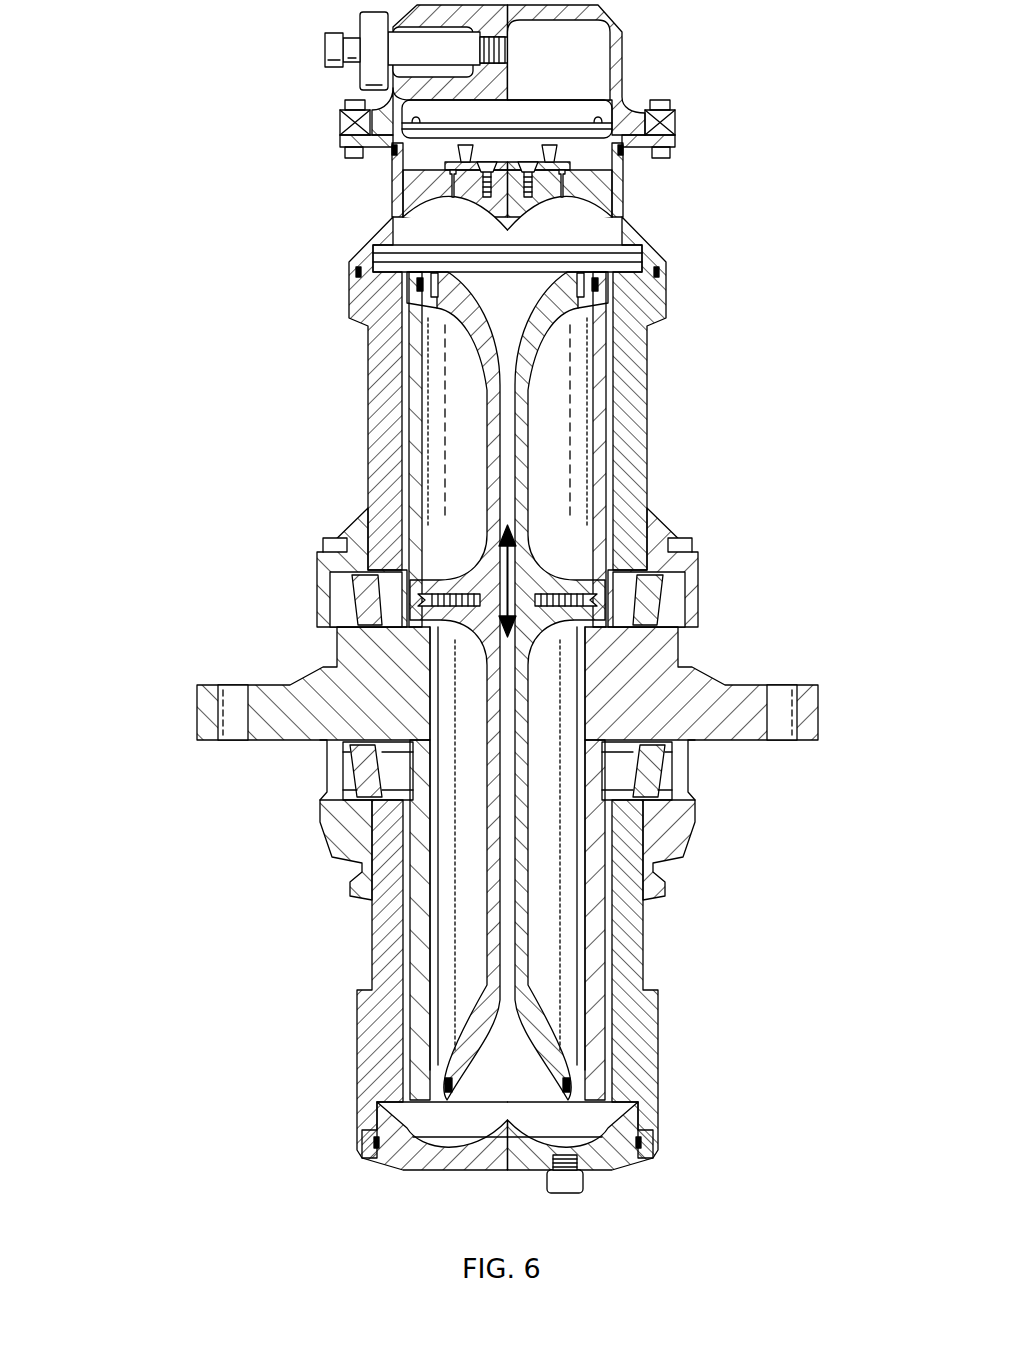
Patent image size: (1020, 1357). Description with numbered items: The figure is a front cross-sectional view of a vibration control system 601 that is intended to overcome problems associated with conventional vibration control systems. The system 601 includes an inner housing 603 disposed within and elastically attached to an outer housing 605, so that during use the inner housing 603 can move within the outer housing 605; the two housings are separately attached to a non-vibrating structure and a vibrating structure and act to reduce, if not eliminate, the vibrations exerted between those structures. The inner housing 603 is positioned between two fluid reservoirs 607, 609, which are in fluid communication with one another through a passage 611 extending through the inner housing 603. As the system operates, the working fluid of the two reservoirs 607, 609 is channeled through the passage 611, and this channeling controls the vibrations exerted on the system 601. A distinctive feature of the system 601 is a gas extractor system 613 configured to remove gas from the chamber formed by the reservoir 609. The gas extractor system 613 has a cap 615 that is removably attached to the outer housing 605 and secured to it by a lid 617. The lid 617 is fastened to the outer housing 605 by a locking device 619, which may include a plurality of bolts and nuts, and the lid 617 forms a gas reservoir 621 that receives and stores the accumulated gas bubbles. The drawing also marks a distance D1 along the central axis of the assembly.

The vibration control system 601 is at (160, 73).
The inner housing 603 is at (733, 687).
The outer housing 605 is at (647, 400).
The fluid reservoir 607 is at (422, 1122).
The fluid reservoir 609 is at (405, 240).
The passage 611 is at (520, 497).
The gas extractor system 613 is at (743, 55).
The cap 615 is at (625, 188).
The lid 617 is at (625, 78).
The locking device 619 is at (332, 123).
The gas reservoir 621 is at (597, 65).
The stroke distance D1 is at (507, 587).